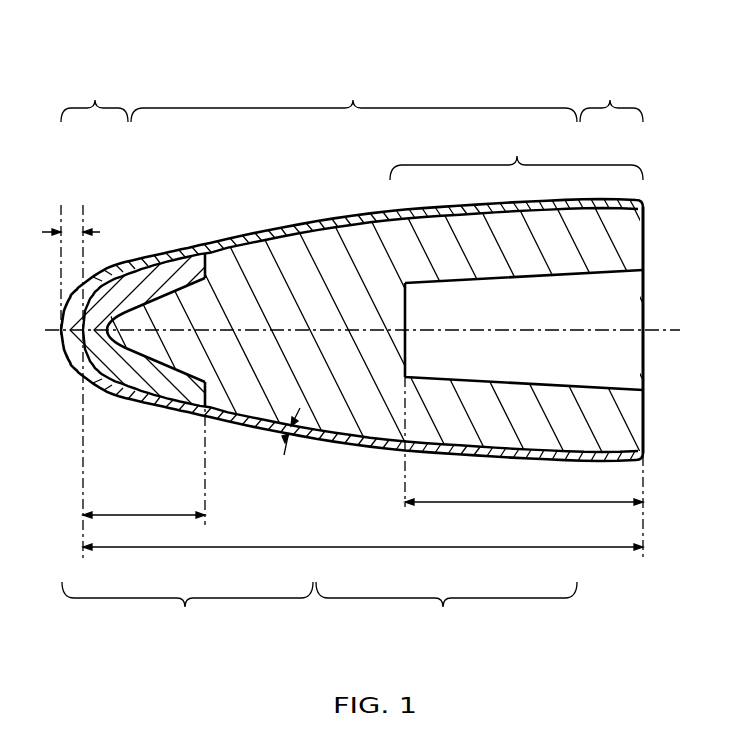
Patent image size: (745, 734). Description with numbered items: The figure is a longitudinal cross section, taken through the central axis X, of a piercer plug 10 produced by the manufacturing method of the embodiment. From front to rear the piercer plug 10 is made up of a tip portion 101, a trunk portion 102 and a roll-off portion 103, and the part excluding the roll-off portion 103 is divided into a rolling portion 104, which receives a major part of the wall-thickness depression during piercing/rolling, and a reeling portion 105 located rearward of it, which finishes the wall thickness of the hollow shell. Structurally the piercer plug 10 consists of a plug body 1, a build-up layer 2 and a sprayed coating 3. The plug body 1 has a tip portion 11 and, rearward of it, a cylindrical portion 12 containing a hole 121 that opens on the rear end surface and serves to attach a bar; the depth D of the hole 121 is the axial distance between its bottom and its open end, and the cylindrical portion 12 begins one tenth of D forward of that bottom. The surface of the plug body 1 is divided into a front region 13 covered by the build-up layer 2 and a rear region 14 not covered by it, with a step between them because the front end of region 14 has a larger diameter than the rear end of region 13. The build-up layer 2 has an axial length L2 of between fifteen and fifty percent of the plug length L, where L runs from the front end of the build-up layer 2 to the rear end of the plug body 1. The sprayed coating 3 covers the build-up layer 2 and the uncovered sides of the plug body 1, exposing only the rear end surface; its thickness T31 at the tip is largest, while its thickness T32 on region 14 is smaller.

The piercer plug 10 is at (631, 48).
The plug body 1 is at (646, 418).
The build-up layer 2 is at (190, 388).
The sprayed coating 3 is at (233, 423).
The tip portion 11 is at (146, 320).
The cylindrical portion 12 is at (516, 154).
The region 13 is at (174, 290).
The region 14 is at (262, 232).
The hole 121 is at (612, 361).
The tip portion 101 is at (94, 97).
The trunk portion 102 is at (354, 97).
The roll-off portion 103 is at (611, 97).
The rolling portion 104 is at (187, 613).
The reeling portion 105 is at (446, 612).
The central axis X is at (352, 330).
The thickness of the sprayed coating at the tip T31 is at (71, 379).
The thickness of the sprayed coating on region 14 T32 is at (306, 441).
The length of the piercer plug L is at (363, 506).
The length of the build-up layer L2 is at (144, 460).
The depth of the hole D is at (524, 442).